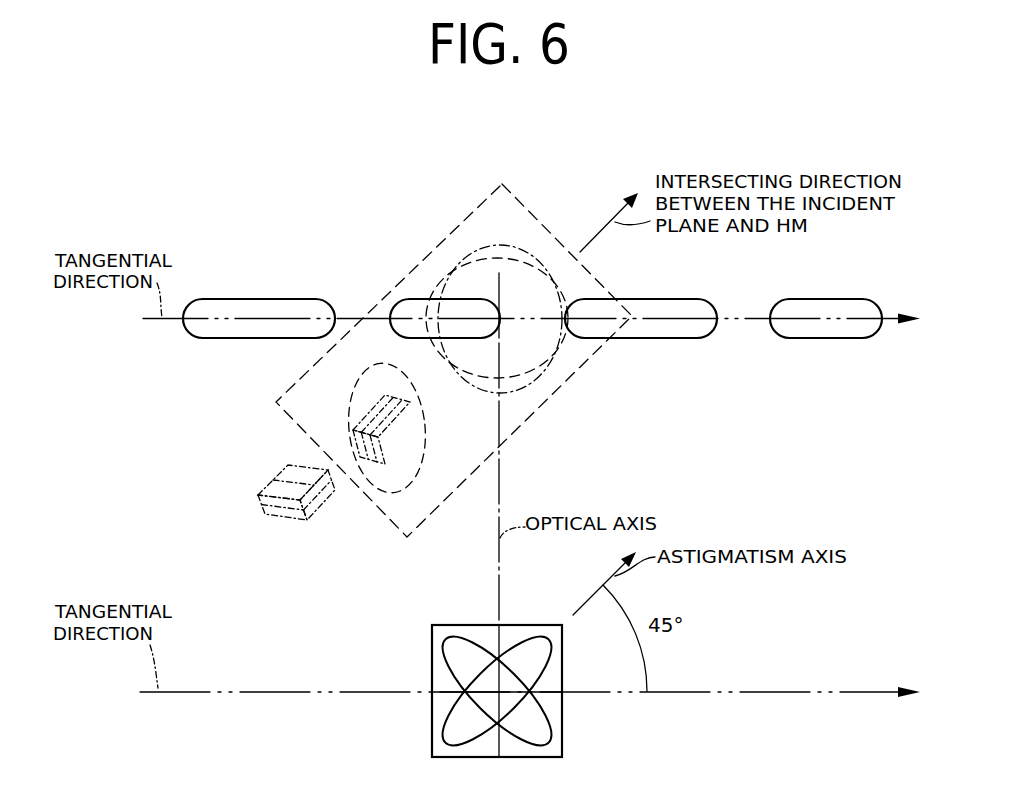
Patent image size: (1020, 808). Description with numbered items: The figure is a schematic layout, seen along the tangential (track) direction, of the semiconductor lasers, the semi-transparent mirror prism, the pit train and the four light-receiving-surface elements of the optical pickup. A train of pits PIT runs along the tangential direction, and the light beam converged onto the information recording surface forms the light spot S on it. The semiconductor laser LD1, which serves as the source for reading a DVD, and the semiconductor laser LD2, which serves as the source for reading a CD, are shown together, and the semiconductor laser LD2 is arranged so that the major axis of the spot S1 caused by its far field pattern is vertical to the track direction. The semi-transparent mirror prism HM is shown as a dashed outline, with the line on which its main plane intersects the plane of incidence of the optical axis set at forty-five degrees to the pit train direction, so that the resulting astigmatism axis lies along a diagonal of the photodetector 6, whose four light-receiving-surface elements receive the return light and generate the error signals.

The photodetector of four light-receiving-surface elements 6 is at (563, 713).
The light spot S is at (435, 297).
The spot caused by the far field pattern of the semiconductor laser LD2 S1 is at (538, 378).
The semi-transparent mirror prism HM is at (276, 400).
The pit PIT is at (697, 338).
The semiconductor laser LD1 is at (407, 447).
The semiconductor laser LD2 is at (337, 497).